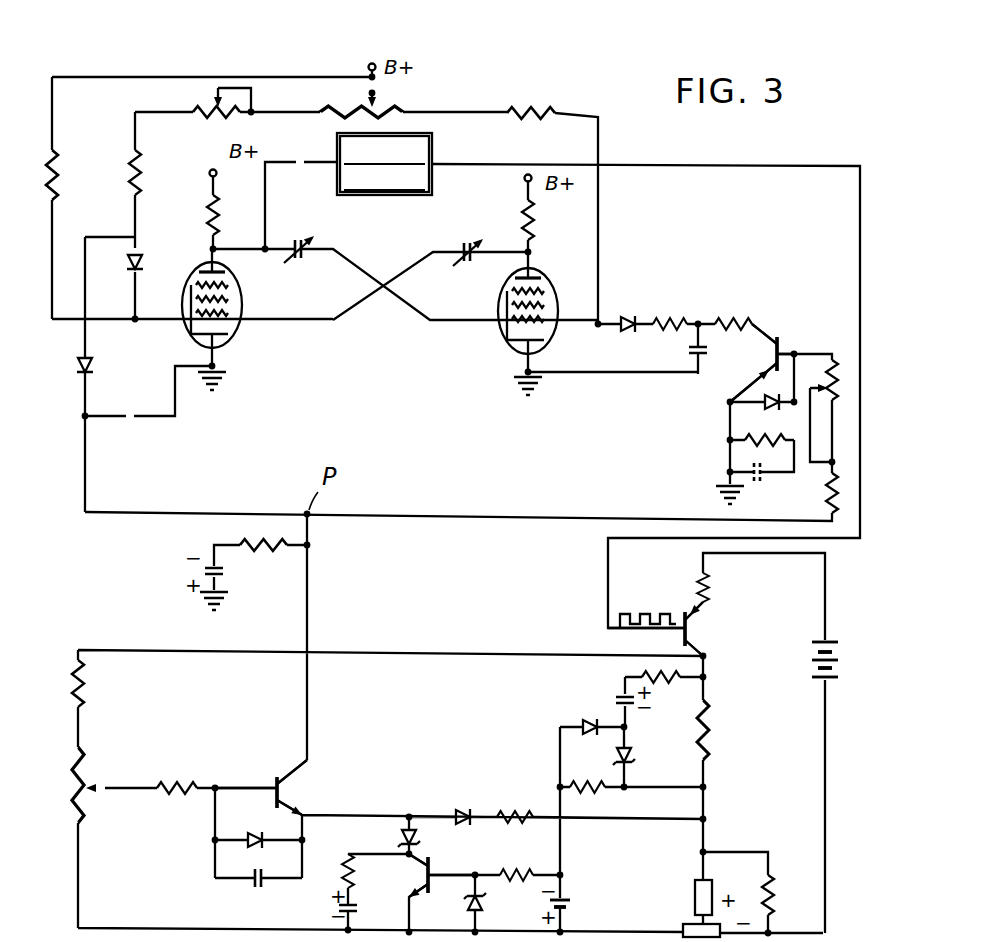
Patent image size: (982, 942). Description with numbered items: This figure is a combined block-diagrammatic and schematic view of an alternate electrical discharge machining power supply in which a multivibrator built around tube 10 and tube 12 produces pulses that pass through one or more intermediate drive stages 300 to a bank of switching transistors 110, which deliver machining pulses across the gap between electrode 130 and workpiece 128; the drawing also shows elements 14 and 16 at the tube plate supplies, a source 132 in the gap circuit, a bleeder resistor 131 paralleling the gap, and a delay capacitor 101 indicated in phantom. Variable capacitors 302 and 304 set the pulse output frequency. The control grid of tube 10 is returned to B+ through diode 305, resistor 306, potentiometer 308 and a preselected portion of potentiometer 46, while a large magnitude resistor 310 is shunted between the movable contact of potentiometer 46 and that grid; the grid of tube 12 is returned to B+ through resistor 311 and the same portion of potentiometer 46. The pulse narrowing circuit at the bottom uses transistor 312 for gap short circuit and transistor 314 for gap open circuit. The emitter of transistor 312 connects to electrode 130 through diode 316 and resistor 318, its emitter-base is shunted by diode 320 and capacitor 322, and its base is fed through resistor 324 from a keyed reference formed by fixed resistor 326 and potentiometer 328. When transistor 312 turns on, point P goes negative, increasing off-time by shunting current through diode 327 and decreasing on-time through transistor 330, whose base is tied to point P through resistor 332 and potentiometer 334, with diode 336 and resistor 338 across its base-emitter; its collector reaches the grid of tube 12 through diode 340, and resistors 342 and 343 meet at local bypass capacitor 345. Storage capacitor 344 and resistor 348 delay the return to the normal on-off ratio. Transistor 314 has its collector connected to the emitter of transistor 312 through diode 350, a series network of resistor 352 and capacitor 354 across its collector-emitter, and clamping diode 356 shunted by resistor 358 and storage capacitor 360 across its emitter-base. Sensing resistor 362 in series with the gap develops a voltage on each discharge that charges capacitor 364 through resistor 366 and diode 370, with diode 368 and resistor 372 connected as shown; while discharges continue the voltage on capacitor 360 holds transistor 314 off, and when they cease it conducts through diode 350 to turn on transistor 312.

The large magnitude resistor 310 is at (58, 152).
The potentiometer 308 is at (210, 104).
The resistor 306 is at (128, 172).
The diode 305 is at (143, 260).
The plate load resistor 14 is at (220, 218).
The potentiometer 46 is at (382, 94).
The resistor 311 is at (556, 88).
The drive stage 300 is at (440, 150).
The variable capacitor 302 is at (294, 241).
The variable capacitor 304 is at (465, 242).
The plate load resistor 16 is at (537, 222).
The tube 10 is at (238, 333).
The tube 12 is at (500, 336).
The diode 327 is at (78, 370).
The diode 340 is at (627, 318).
The resistor 343 is at (665, 320).
The resistor 342 is at (720, 318).
The transistor 330 is at (786, 337).
The potentiometer 334 is at (840, 360).
The local bypass capacitor 345 is at (690, 355).
The diode 336 is at (759, 414).
The resistor 338 is at (745, 447).
The delay capacitor 101 is at (722, 478).
The resistor 332 is at (825, 500).
The storage capacitor 344 is at (200, 572).
The resistor 348 is at (263, 555).
The switching transistor 110 is at (712, 631).
The battery 132 is at (818, 660).
The capacitor 364 is at (618, 696).
The resistor 366 is at (670, 690).
The diode 368 is at (581, 720).
The resistor 362 is at (715, 745).
The diode 370 is at (632, 760).
The resistor 372 is at (595, 795).
The storage capacitor 360 is at (570, 902).
The electrode 130 is at (695, 895).
The workpiece 128 is at (683, 930).
The bleeder resistor 131 is at (772, 895).
The fixed resistor 326 is at (84, 697).
The potentiometer 328 is at (92, 766).
The resistor 324 is at (180, 797).
The transistor 312 is at (288, 765).
The diode 320 is at (263, 815).
The capacitor 322 is at (257, 888).
The diode 350 is at (400, 837).
The resistor 352 is at (346, 871).
The capacitor 354 is at (338, 912).
The transistor 314 is at (416, 874).
The clamping diode 356 is at (468, 906).
The resistor 358 is at (530, 850).
The diode 316 is at (462, 810).
The resistor 318 is at (526, 789).